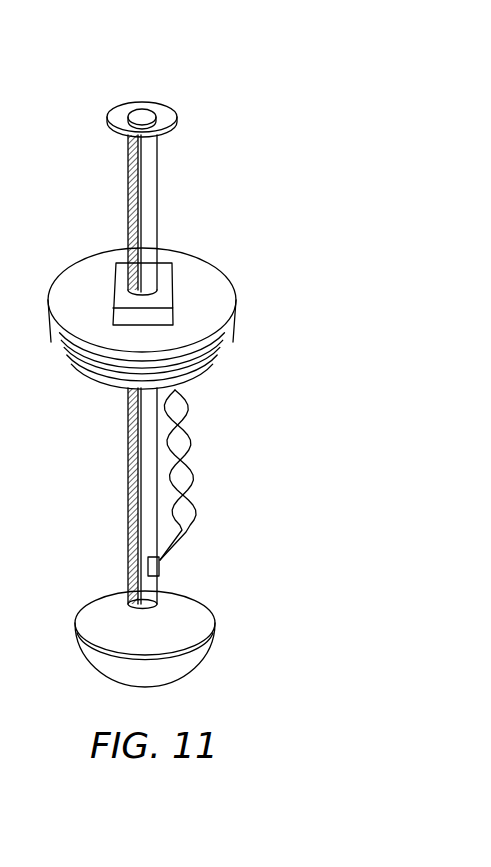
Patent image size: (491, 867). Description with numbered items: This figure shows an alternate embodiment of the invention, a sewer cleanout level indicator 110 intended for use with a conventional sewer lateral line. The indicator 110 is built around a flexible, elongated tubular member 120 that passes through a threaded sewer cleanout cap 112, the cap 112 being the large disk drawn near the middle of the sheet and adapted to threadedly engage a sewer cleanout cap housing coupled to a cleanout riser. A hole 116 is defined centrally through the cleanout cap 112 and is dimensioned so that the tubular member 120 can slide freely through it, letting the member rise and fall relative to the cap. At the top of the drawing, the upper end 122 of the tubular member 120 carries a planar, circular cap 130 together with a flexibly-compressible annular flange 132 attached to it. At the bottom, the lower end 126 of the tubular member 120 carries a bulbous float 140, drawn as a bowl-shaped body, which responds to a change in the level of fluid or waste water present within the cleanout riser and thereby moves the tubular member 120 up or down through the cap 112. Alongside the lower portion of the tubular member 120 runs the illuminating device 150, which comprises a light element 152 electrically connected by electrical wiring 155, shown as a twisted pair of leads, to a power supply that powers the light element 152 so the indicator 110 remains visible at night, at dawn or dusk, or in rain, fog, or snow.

The sewer cleanout level indicator 110 is at (222, 78).
The threaded sewer cleanout cap 112 is at (212, 280).
The hole 116 is at (162, 275).
The tubular member 120 is at (128, 467).
The upper end 122 is at (128, 150).
The lower end 126 is at (128, 592).
The planar circular cap 130 is at (133, 113).
The flexibly-compressible annular flange 132 is at (172, 135).
The bulbous float 140 is at (90, 618).
The illuminating device 150 is at (159, 562).
The light element 152 is at (153, 566).
The electrical wiring 155 is at (187, 463).